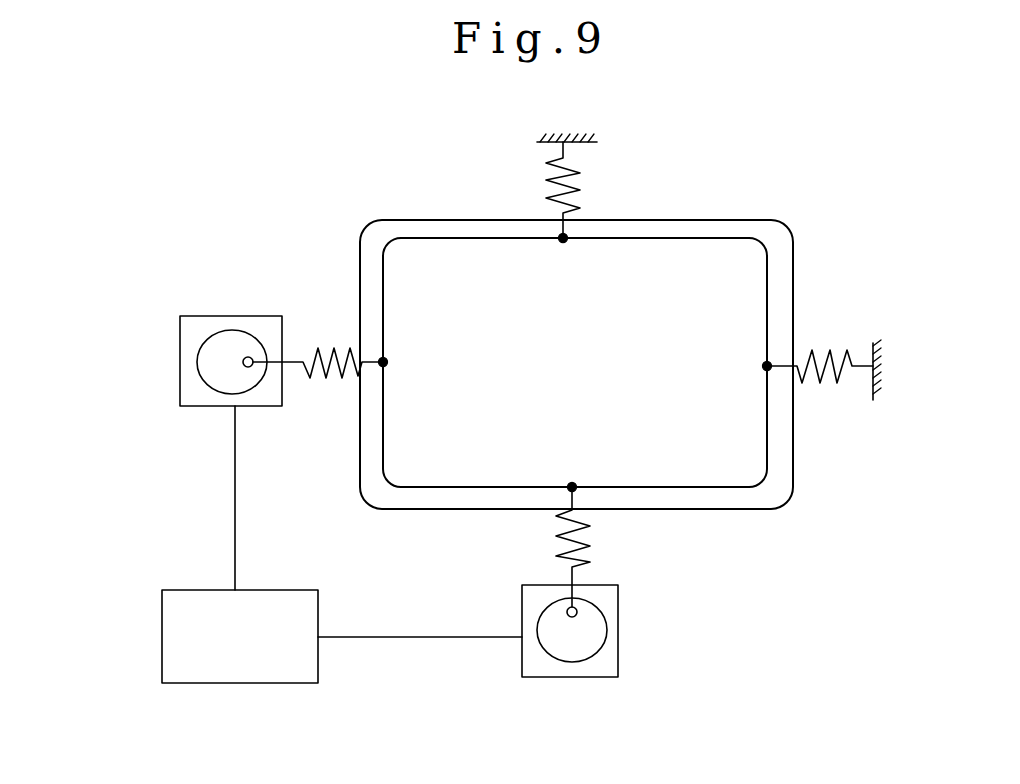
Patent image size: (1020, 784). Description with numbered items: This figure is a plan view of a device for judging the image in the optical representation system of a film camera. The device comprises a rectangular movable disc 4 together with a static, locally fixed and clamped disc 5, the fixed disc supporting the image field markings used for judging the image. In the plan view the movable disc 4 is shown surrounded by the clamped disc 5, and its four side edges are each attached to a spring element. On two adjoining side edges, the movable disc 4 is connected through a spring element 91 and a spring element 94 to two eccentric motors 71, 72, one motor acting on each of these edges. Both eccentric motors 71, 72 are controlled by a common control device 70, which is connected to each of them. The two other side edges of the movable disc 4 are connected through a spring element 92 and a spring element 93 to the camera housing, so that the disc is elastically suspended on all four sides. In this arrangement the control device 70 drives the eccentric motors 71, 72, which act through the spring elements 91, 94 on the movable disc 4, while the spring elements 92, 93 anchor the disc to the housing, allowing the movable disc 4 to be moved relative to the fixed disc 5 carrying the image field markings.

The movable disc 4 is at (443, 275).
The static locally fixed and clamped disc 5 is at (777, 455).
The control device 70 is at (192, 632).
The eccentric motor 71 is at (194, 322).
The eccentric motor 72 is at (607, 632).
The spring element 91 is at (320, 348).
The spring element 92 is at (578, 173).
The spring element 93 is at (847, 350).
The spring element 94 is at (557, 543).